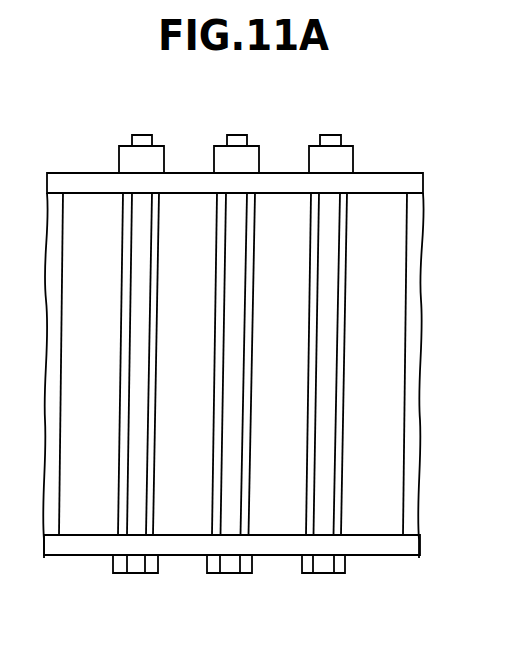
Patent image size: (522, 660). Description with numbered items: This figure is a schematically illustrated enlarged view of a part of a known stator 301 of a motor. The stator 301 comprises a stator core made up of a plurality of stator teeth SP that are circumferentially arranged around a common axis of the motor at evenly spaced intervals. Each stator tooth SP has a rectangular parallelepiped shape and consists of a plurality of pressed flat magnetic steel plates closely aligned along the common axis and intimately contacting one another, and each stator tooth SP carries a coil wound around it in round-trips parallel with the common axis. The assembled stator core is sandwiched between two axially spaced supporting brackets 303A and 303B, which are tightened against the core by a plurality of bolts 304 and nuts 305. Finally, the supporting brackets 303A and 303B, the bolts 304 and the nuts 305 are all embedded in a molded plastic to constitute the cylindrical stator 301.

The stator 301 is at (396, 163).
The supporting bracket 303A is at (70, 185).
The supporting bracket 303B is at (70, 545).
The bolt 304 is at (137, 573).
The nut 305 is at (352, 145).
The stator tooth SP is at (93, 360).